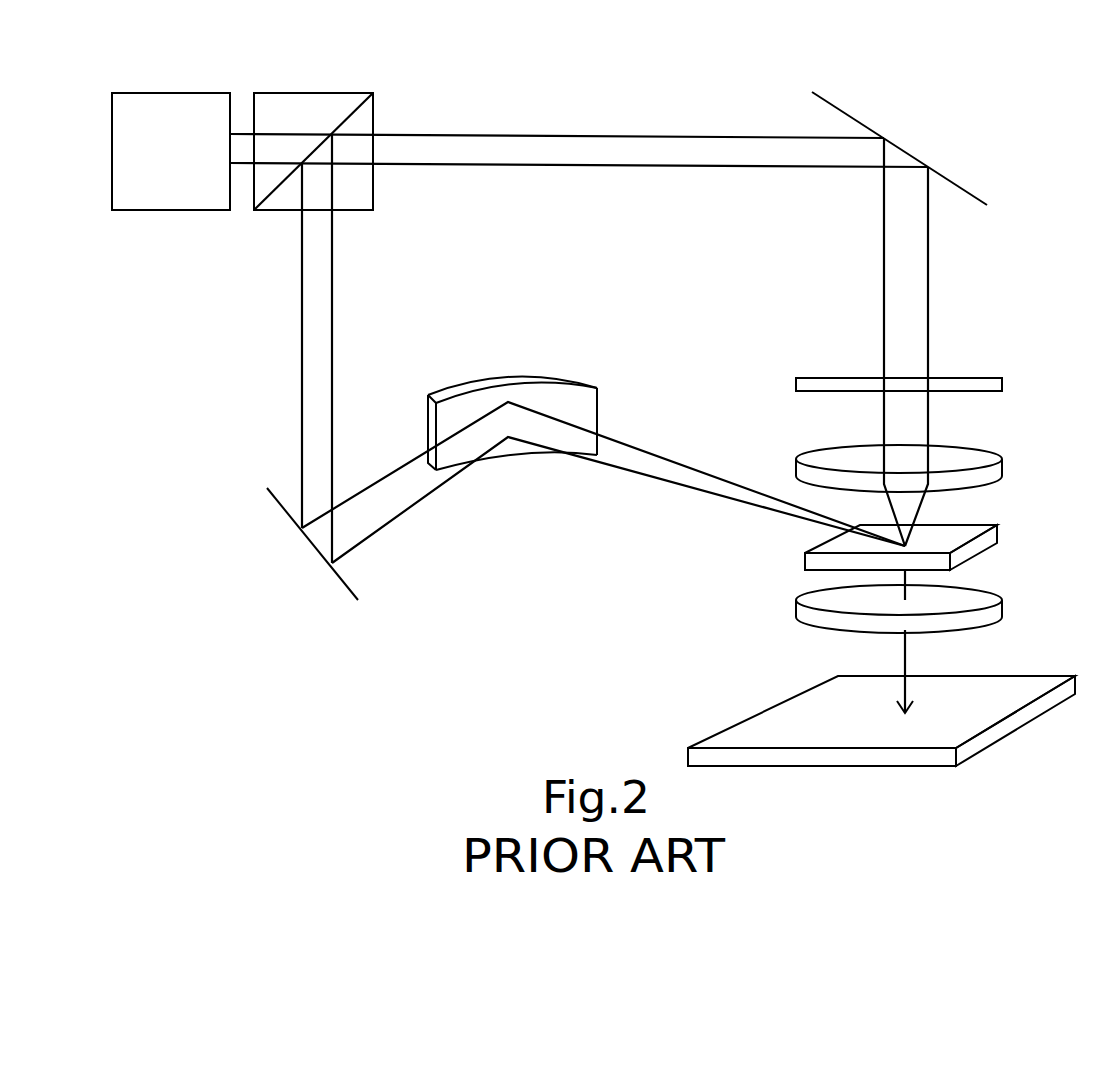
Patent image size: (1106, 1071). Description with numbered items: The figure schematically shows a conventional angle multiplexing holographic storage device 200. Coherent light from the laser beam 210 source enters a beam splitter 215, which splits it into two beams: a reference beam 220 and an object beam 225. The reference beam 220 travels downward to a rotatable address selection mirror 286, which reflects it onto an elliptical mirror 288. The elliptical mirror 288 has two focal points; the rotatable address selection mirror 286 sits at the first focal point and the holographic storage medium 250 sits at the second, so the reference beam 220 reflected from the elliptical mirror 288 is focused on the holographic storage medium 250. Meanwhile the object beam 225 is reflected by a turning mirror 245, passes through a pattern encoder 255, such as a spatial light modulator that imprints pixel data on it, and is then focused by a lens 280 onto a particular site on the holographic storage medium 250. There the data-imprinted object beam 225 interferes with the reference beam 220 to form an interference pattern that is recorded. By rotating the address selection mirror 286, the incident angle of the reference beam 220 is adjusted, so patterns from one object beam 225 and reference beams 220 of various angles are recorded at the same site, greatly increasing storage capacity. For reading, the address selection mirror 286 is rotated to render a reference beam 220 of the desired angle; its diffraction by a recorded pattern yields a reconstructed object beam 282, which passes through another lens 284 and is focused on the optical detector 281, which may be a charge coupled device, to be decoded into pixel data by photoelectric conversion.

The angle multiplexing holographic storage device 200 is at (498, 92).
The laser beam 210 is at (178, 92).
The beam splitter 215 is at (319, 92).
The reference beam 220 is at (302, 356).
The object beam 225 is at (663, 135).
The turning mirror 245 is at (854, 119).
The holographic storage medium 250 is at (960, 525).
The pattern encoder 255 is at (960, 377).
The lens 280 is at (960, 448).
The optical detector 281 is at (752, 714).
The reconstructed object beam 282 is at (905, 666).
The lens 284 is at (960, 585).
The rotatable address selection mirror 286 is at (308, 541).
The elliptical mirror 288 is at (535, 377).